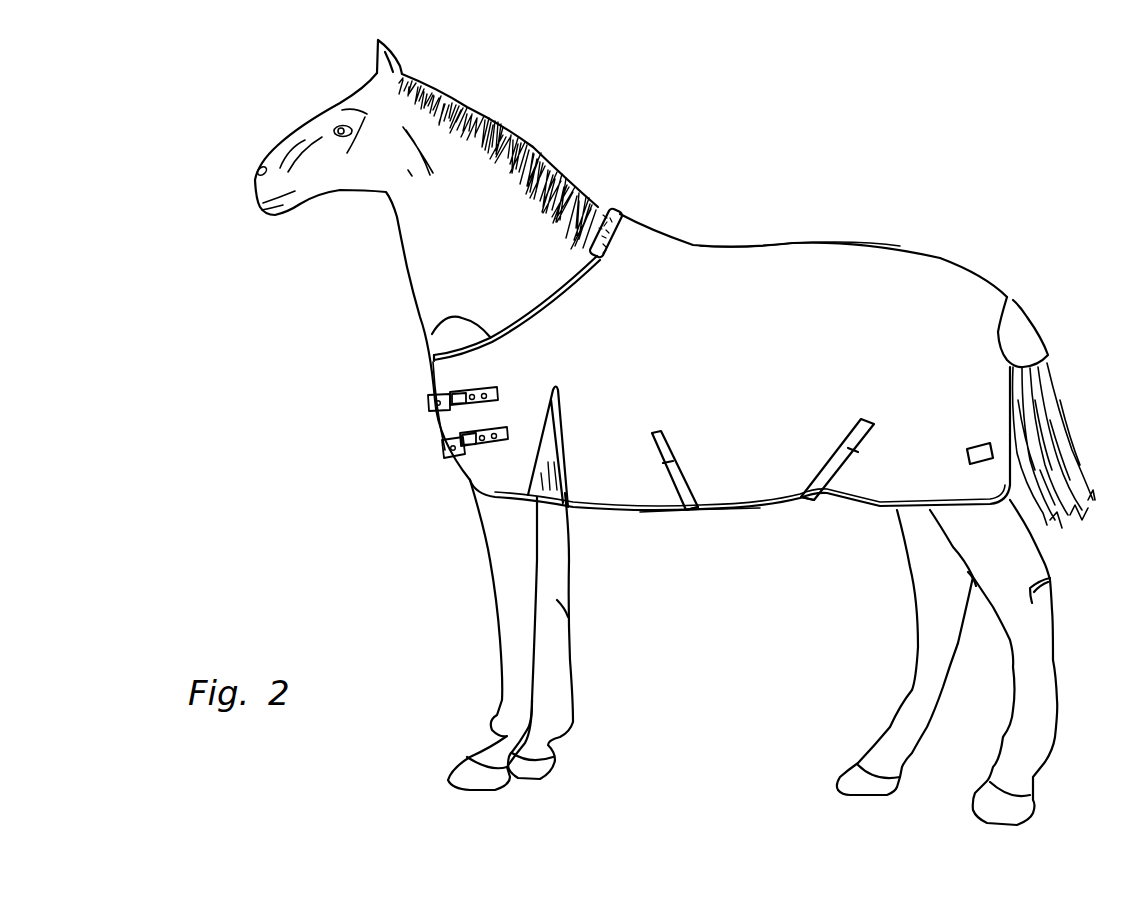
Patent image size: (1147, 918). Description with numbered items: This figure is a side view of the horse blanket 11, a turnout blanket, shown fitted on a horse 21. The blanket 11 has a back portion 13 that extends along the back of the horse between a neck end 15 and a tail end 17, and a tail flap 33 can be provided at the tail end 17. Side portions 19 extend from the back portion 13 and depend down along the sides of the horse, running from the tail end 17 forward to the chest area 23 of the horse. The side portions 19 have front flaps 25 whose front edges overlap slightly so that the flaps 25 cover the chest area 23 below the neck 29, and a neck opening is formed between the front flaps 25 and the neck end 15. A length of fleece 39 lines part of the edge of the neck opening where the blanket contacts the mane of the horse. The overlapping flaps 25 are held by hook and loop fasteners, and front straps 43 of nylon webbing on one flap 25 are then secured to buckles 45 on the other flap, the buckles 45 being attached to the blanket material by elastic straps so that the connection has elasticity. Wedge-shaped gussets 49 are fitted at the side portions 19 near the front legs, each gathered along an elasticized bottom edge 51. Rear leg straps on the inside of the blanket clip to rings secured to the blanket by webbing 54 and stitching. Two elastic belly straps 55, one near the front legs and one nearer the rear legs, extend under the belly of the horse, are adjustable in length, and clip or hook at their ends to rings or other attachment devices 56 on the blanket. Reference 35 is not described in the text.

The horse blanket 11 is at (725, 245).
The back portion 13 is at (827, 240).
The neck end 15 is at (630, 220).
The tail end 17 is at (1000, 287).
The side portions 19 is at (870, 477).
The horse 21 is at (503, 120).
The chest area 23 is at (460, 380).
The front flaps 25 is at (460, 425).
The neck 29 is at (455, 238).
The tail flap 33 is at (1033, 340).
The shoulder portion 35 is at (452, 320).
The fleece portion 39 is at (612, 207).
The front straps 43 is at (427, 402).
The buckles 45 is at (467, 457).
The gussets 49 is at (549, 462).
The bottom edge 51 is at (547, 503).
The webbing 54 is at (977, 440).
The belly straps 55 is at (690, 510).
The attachment devices 56 is at (666, 440).